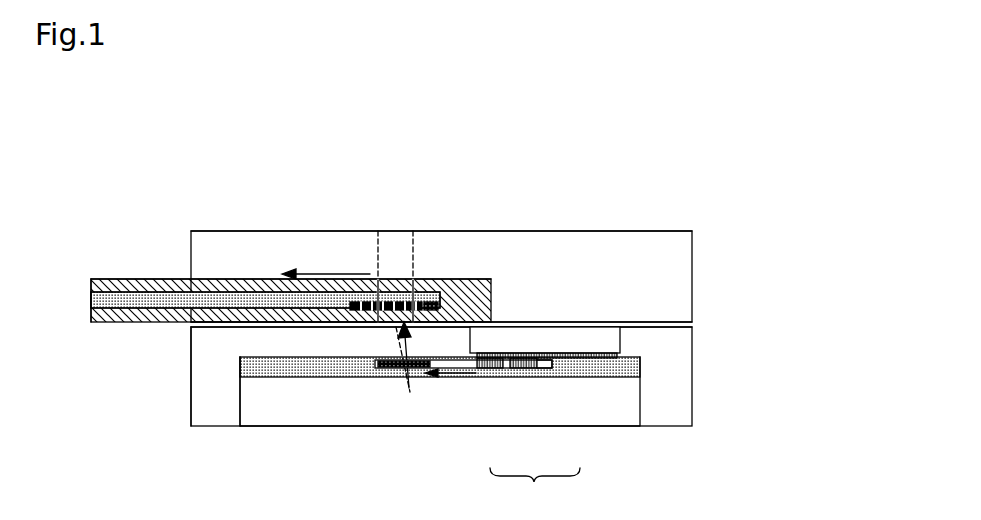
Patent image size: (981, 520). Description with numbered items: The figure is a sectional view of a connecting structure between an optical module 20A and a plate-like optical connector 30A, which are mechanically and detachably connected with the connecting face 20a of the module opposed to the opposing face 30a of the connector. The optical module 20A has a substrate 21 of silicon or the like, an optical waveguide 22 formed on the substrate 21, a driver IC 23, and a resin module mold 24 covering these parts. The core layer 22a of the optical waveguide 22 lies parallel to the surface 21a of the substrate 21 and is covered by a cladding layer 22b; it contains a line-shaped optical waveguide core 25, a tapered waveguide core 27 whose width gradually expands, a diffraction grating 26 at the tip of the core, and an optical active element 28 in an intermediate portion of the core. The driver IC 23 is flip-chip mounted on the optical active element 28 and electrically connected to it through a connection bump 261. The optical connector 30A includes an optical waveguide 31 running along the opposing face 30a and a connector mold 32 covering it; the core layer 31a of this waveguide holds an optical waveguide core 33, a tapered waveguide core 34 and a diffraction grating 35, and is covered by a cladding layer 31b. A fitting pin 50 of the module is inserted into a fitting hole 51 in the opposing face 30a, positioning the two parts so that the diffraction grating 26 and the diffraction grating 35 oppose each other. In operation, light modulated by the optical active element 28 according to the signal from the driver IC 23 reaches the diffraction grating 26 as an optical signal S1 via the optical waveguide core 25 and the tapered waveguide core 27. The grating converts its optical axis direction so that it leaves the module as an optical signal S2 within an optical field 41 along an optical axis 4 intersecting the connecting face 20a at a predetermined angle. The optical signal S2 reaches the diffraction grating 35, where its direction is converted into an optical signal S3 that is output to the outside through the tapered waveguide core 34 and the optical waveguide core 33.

The optical axis 4 is at (430, 337).
The optical module 20A is at (692, 392).
The connecting face 20a is at (668, 327).
The substrate 21 is at (493, 422).
The surface of the substrate 21a is at (642, 363).
The optical waveguide 22 is at (535, 489).
The core layer 22a is at (479, 372).
The cladding layer 22b is at (501, 372).
The driver IC 23 is at (541, 330).
The module mold 24 is at (191, 368).
The optical waveguide core 25 is at (464, 372).
The diffraction grating 26 is at (384, 370).
The tapered waveguide core 27 is at (446, 371).
The optical active element 28 is at (526, 372).
The connection bump 261 is at (607, 352).
The optical connector 30A is at (692, 259).
The opposing face 30a is at (652, 328).
The optical waveguide 31 is at (258, 261).
The core layer 31a is at (90, 296).
The cladding layer 31b is at (105, 278).
The connector mold 32 is at (250, 245).
The optical waveguide core 33 is at (137, 300).
The tapered waveguide core 34 is at (346, 296).
The diffraction grating 35 is at (366, 303).
The optical field 41 is at (400, 329).
The fitting pin 50 is at (396, 262).
The fitting hole 51 is at (395, 262).
The optical signal S1 is at (472, 376).
The optical signal S2 is at (408, 342).
The optical signal S3 is at (316, 273).